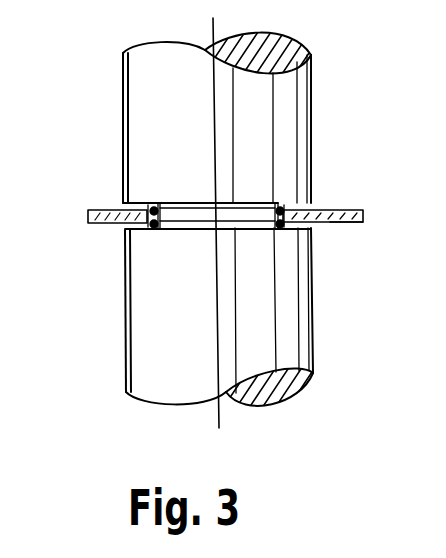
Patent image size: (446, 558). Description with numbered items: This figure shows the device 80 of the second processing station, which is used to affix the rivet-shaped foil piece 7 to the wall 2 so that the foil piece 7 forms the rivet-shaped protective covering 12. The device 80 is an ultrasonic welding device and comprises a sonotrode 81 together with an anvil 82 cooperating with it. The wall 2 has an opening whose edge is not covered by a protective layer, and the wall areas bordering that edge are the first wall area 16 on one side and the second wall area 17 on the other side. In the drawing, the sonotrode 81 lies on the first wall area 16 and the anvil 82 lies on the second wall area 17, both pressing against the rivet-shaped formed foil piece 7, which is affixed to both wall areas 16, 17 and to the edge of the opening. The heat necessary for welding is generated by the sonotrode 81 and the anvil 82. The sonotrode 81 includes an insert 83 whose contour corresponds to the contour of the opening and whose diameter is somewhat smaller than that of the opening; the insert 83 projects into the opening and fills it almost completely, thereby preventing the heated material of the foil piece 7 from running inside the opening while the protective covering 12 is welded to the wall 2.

The device 80 is at (104, 167).
The sonotrode 81 is at (138, 92).
The anvil 82 is at (138, 343).
The first wall area 16 is at (88, 211).
The wall 2 is at (347, 208).
The rivet-shaped foil piece 7 is at (268, 198).
The protective covering 12 is at (158, 231).
The second wall area 17 is at (340, 224).
The insert 83 is at (262, 228).